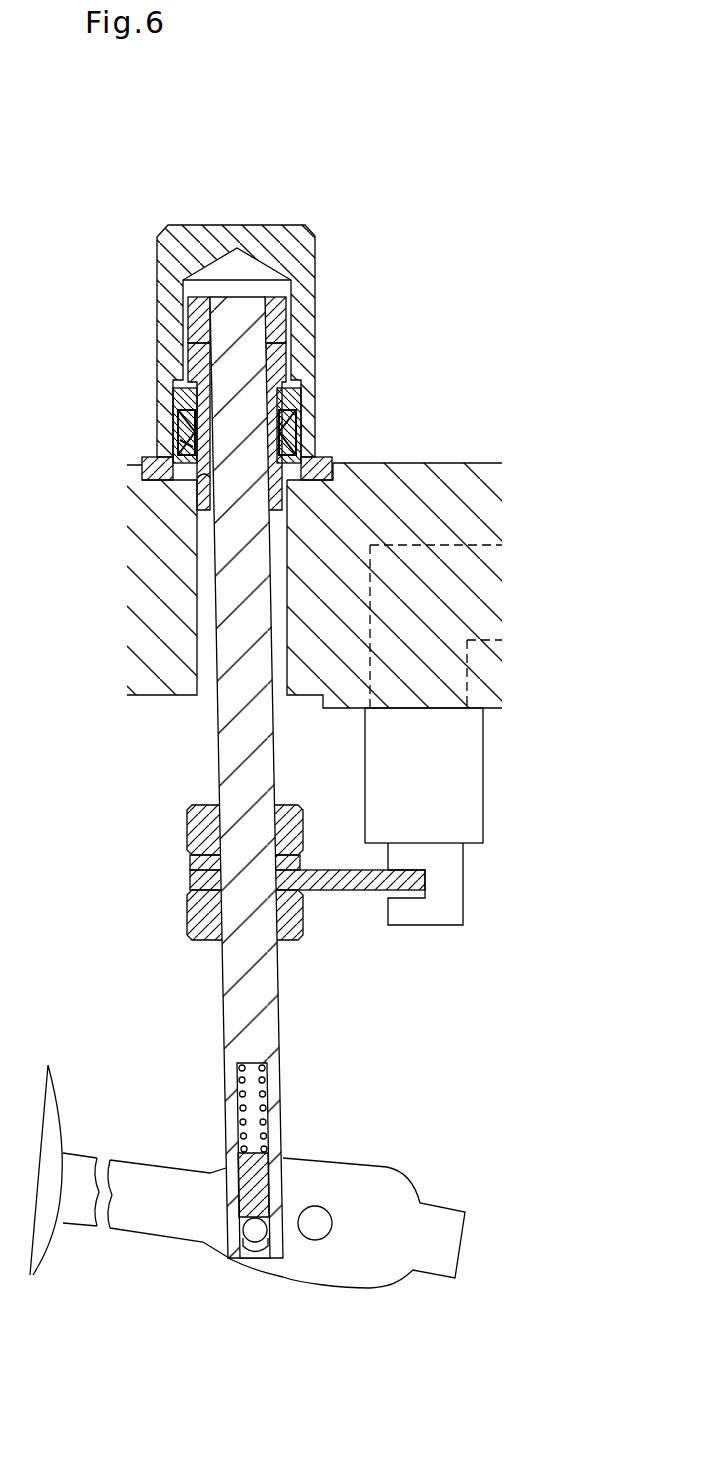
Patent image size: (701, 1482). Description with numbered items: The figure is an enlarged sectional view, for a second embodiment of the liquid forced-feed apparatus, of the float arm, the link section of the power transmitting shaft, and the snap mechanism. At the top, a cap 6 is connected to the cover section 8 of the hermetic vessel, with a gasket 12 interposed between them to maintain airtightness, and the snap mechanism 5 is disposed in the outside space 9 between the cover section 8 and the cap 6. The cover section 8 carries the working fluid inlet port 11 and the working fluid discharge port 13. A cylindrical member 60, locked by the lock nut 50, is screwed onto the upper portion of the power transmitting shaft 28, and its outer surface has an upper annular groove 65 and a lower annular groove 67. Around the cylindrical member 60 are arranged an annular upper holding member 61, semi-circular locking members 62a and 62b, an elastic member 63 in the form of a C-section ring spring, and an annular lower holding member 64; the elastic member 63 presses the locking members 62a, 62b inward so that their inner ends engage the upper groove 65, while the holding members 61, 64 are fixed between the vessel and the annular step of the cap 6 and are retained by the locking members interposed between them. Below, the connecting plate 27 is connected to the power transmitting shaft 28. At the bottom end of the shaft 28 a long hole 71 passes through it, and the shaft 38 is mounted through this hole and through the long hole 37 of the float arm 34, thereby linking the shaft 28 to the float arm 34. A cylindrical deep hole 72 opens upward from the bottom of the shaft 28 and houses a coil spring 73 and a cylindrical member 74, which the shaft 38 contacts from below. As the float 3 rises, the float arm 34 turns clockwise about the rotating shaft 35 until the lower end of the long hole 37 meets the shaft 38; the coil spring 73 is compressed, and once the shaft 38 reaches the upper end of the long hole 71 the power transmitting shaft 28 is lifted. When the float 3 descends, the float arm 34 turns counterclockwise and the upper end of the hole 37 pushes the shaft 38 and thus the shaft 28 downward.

The float 3 is at (55, 1078).
The snap mechanism 5 is at (231, 340).
The cap 6 is at (195, 236).
The cover section 8 is at (370, 557).
The outside space 9 is at (248, 277).
The working fluid inlet port 11 is at (491, 626).
The working fluid discharge port 13 is at (500, 592).
The gasket 12 is at (322, 470).
The connecting plate 27 is at (425, 882).
The power transmitting shaft 28 is at (237, 999).
The float arm 34 is at (137, 1177).
The rotating shaft 35 is at (332, 1223).
The long hole 37 is at (272, 1195).
The shaft 38 is at (250, 1231).
The lock nut 50 is at (283, 305).
The cylindrical member 60 is at (280, 354).
The upper holding member 61 is at (176, 392).
The locking member 62a is at (178, 418).
The locking member 62b is at (296, 430).
The elastic member 63 is at (172, 440).
The lower holding member 64 is at (150, 462).
The upper annular groove 65 is at (284, 398).
The lower annular groove 67 is at (200, 480).
The long hole 71 is at (255, 1249).
The deep hole 72 is at (265, 1112).
The coil spring 73 is at (263, 1092).
The cylindrical member 74 is at (260, 1177).